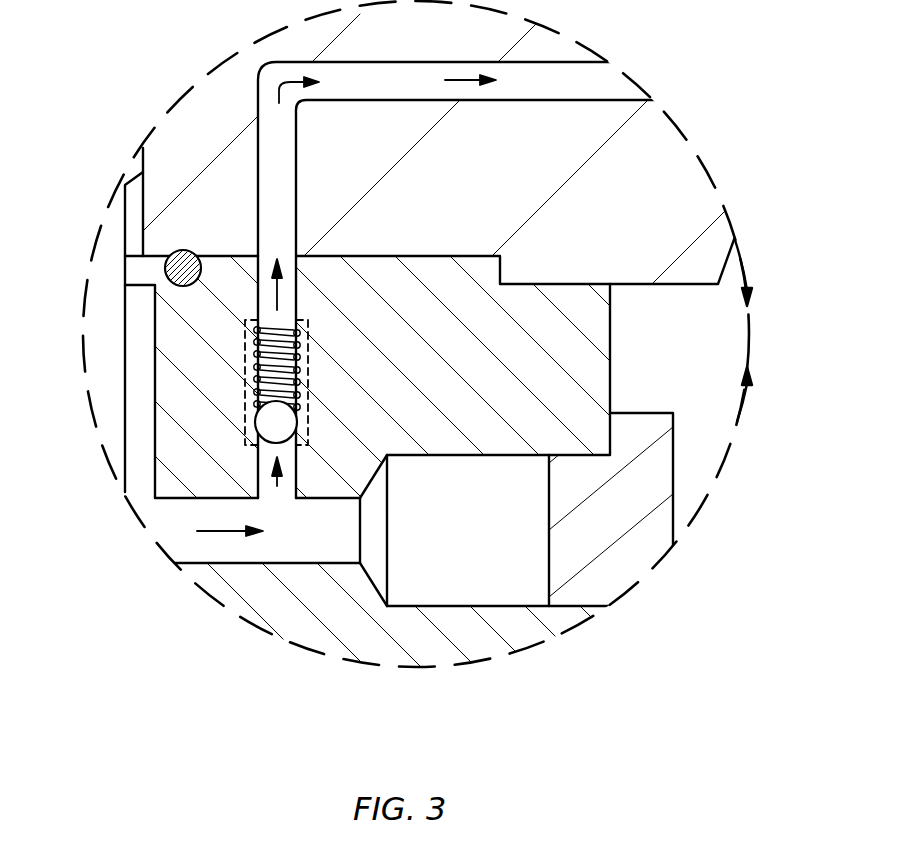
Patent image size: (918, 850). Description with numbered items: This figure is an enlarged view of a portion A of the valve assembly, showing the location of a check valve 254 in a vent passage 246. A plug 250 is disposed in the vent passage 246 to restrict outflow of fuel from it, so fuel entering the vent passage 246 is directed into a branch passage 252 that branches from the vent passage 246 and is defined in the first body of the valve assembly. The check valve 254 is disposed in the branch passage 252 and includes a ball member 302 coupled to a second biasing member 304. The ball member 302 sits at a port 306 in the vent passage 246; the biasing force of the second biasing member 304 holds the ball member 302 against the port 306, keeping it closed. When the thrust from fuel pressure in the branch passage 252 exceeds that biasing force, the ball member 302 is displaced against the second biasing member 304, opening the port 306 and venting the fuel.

The plug 250 is at (655, 527).
The branch passage 252 is at (275, 237).
The vent passage 246 is at (180, 529).
The check valve 254 is at (245, 342).
The second biasing member 304 is at (268, 358).
The ball member 302 is at (276, 414).
The port 306 is at (277, 478).
The portion A is at (723, 460).